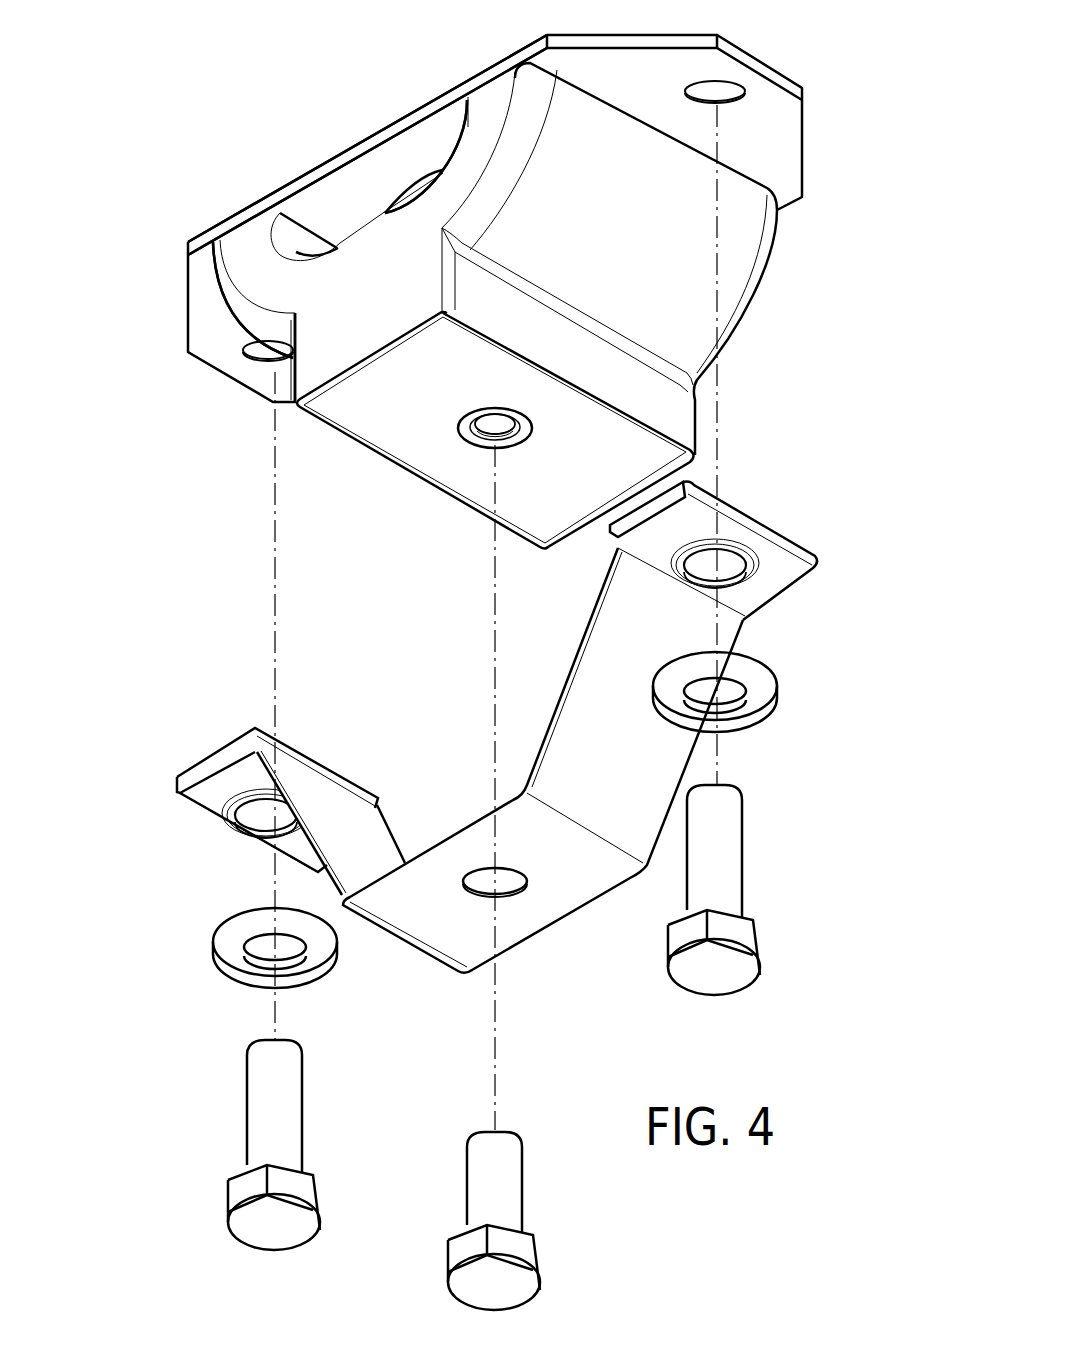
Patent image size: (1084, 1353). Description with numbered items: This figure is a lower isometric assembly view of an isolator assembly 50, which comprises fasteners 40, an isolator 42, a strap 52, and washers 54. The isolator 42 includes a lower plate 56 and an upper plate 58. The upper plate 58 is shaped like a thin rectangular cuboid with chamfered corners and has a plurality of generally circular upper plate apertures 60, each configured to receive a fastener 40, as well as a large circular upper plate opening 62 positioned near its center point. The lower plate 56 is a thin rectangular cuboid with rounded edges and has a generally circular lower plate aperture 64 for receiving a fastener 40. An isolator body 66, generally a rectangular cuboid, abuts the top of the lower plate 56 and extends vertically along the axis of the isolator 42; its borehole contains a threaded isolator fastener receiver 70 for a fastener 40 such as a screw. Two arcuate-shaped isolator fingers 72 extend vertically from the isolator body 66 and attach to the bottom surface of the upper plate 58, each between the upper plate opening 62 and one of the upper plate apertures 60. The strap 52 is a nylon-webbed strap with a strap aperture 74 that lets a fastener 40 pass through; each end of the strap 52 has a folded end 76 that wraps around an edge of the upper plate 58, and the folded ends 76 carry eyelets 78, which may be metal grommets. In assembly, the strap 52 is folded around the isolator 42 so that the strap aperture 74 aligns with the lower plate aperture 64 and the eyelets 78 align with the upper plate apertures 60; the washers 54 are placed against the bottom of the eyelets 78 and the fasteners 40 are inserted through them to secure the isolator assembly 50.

The fastener 40 is at (722, 853).
The isolator 42 is at (790, 325).
The isolator assembly 50 is at (130, 224).
The strap 52 is at (477, 838).
The washer 54 is at (760, 670).
The lower plate 56 is at (395, 417).
The upper plate 58 is at (333, 164).
The upper plate aperture 60 is at (723, 98).
The upper plate opening 62 is at (413, 190).
The lower plate aperture 64 is at (487, 438).
The isolator body 66 is at (347, 330).
The isolator fastener receiver 70 is at (478, 435).
The isolator finger 72 is at (483, 127).
The strap aperture 74 is at (505, 885).
The folded end 76 is at (758, 535).
The eyelet 78 is at (730, 570).